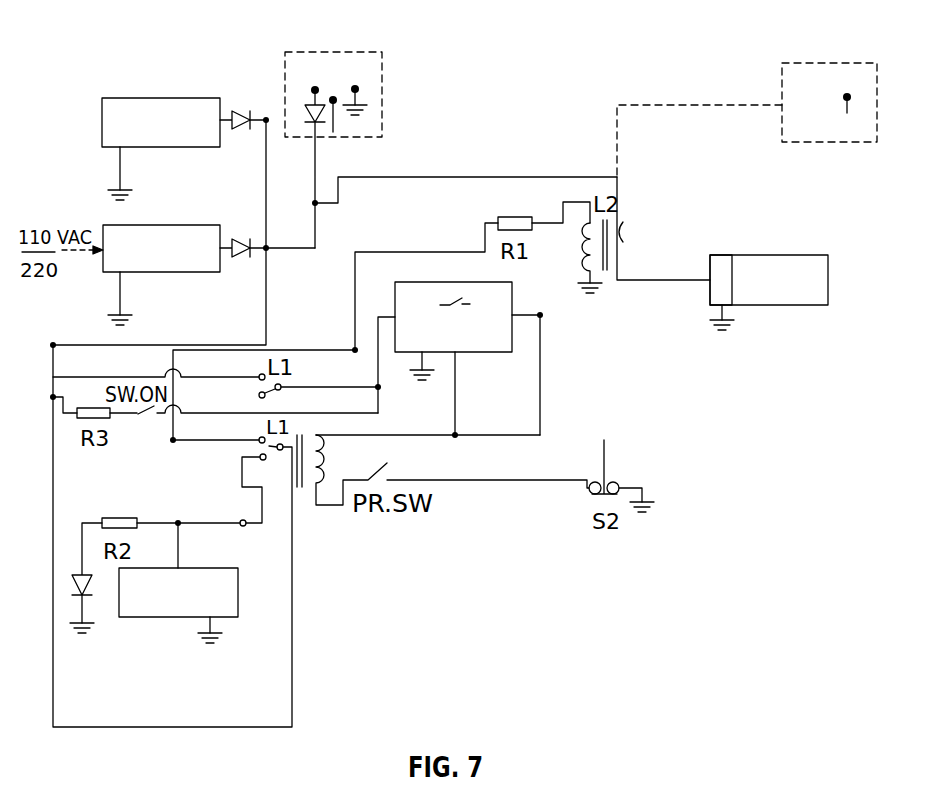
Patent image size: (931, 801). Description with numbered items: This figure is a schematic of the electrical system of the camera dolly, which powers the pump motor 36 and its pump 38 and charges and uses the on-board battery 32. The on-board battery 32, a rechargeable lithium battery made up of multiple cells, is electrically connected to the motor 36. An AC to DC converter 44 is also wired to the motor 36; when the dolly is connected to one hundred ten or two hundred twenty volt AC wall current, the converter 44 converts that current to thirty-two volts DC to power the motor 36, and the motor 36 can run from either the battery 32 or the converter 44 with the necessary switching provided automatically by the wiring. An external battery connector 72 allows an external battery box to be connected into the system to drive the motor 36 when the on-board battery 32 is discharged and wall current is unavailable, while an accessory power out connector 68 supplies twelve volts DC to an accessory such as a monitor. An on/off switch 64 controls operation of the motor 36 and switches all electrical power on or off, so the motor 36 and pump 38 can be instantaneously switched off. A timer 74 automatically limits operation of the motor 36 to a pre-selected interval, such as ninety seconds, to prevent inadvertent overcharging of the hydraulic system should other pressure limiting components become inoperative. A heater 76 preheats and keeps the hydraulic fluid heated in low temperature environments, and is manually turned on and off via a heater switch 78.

The on-board battery 32 is at (100, 123).
The AC to DC converter 44 is at (115, 278).
The external battery connector 72 is at (368, 90).
The accessory power out connector 68 is at (788, 93).
The timer 74 is at (437, 292).
The on/off switch 64 is at (621, 230).
The pump motor 36 is at (720, 268).
The pump 38 is at (805, 268).
The heater switch 78 is at (242, 520).
The heater 76 is at (238, 588).